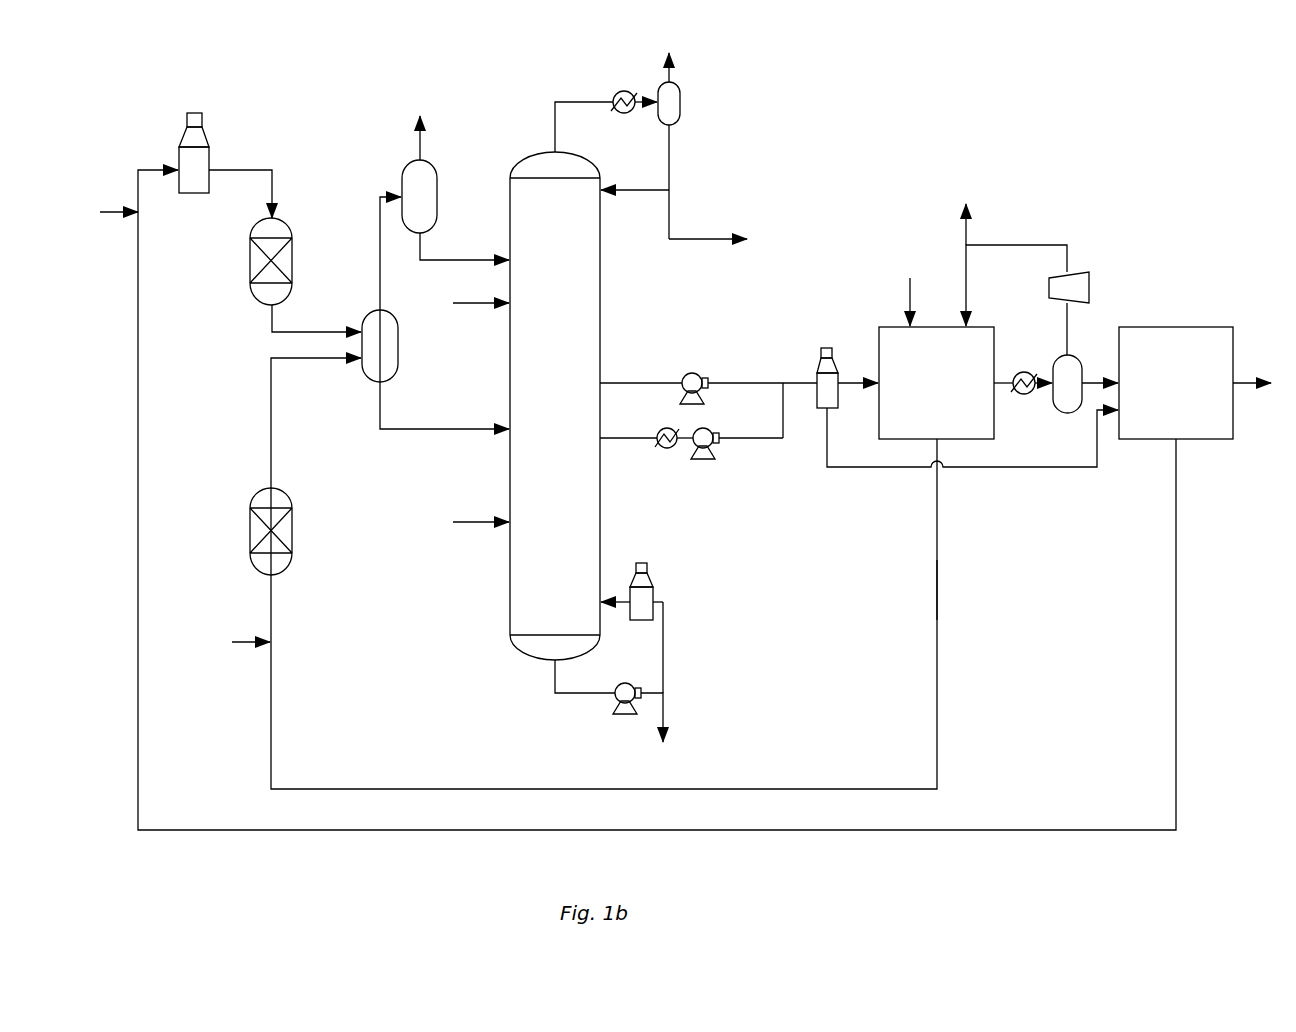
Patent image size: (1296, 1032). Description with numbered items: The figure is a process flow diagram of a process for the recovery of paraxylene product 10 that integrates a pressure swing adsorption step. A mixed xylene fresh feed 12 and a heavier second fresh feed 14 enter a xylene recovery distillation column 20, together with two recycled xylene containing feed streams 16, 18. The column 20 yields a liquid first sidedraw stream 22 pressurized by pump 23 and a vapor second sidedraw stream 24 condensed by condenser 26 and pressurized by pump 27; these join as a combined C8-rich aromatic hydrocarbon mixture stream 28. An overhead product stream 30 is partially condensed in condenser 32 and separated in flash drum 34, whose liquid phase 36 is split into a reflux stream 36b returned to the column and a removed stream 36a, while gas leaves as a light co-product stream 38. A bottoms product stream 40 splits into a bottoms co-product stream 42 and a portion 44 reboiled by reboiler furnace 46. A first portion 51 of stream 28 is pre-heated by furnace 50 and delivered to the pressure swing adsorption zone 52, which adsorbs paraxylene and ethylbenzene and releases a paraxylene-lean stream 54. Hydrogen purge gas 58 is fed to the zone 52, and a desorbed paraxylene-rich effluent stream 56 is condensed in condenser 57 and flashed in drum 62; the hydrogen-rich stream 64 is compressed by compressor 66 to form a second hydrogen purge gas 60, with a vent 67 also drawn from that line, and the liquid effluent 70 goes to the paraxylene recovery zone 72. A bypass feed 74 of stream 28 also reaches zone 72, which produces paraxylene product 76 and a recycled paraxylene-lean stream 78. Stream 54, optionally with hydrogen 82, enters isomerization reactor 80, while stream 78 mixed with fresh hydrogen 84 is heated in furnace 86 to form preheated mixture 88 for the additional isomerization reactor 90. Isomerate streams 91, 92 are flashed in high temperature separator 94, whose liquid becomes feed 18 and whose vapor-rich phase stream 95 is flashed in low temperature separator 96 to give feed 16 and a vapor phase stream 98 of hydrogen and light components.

The process for the recovery of paraxylene product 10 is at (412, 62).
The fresh feed 12 is at (480, 304).
The second fresh feed mixed xylene containing stream 14 is at (467, 522).
The xylene containing feed stream 16 is at (465, 260).
The xylene containing feed stream 18 is at (408, 430).
The xylene recovery distillation column 20 is at (555, 406).
The first sidedraw stream 22 is at (627, 383).
The pump 23 is at (693, 372).
The second sidedraw stream 24 is at (620, 438).
The condenser 26 is at (664, 450).
The pump 27 is at (708, 460).
The combined C8-rich aromatic hydrocarbon mixture stream 28 is at (767, 383).
The overhead product stream 30 is at (553, 100).
The condenser 32 is at (622, 90).
The flash drum 34 is at (682, 100).
The liquid phase stream 36 is at (671, 152).
The stream 36a is at (722, 239).
The reflux stream 36b is at (633, 192).
The light co-product stream 38 is at (673, 70).
The bottoms product stream 40 is at (583, 696).
The bottoms co-product stream 42 is at (668, 710).
The portion of the bottoms product stream 44 is at (665, 640).
The reboiler furnace 46 is at (655, 580).
The furnace 50 is at (826, 347).
The first portion 51 is at (852, 383).
The pressure swing adsorption zone 52 is at (936, 383).
The paraxylene-lean stream 54 is at (940, 585).
The paraxylene-rich and ethylbenzene-rich effluent stream 56 is at (1005, 383).
The condenser 57 is at (1030, 395).
The first source of pressurized hydrogen purge gas 58 is at (909, 292).
The second source of hydrogen purge gas 60 is at (968, 275).
The flash drum 62 is at (1067, 413).
The hydrogen-rich stream 64 is at (1070, 322).
The compressor 66 is at (1084, 274).
The vent stream 67 is at (968, 228).
The paraxylene-rich and ethylbenzene-rich effluent 70 is at (1097, 383).
The paraxylene recovery zone 72 is at (1176, 383).
The C8-rich aromatic hydrocarbon mixture feed 74 is at (1040, 470).
The paraxylene product 76 is at (1248, 383).
The paraxylene-lean stream 78 is at (1178, 500).
The isomerization reactor 80 is at (292, 527).
The hydrogen 82 is at (240, 640).
The fresh hydrogen 84 is at (102, 216).
The furnace 86 is at (196, 112).
The preheated mixture 88 is at (246, 170).
The additional isomerization reactor 90 is at (296, 226).
The isomerate stream 91 is at (308, 360).
The isomerate stream 92 is at (316, 332).
The high temperature separator 94 is at (400, 362).
The vapor-rich phase stream 95 is at (381, 272).
The low temperature separator 96 is at (437, 176).
The vapor phase stream 98 is at (424, 136).